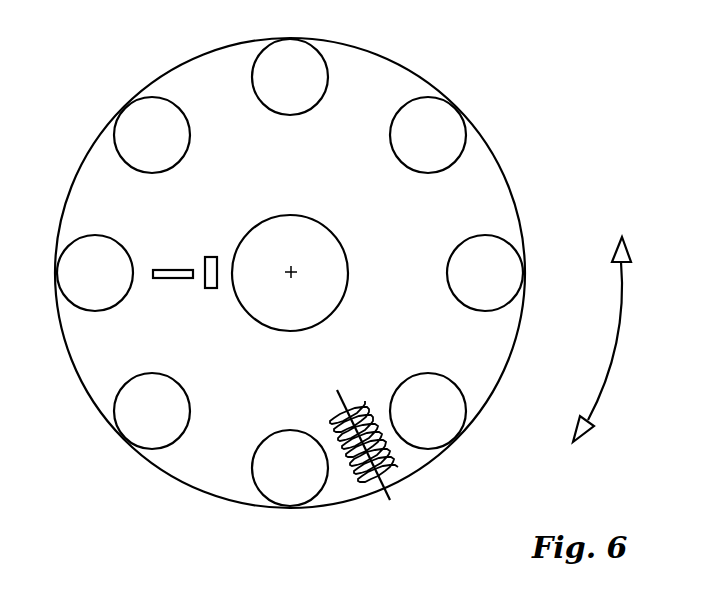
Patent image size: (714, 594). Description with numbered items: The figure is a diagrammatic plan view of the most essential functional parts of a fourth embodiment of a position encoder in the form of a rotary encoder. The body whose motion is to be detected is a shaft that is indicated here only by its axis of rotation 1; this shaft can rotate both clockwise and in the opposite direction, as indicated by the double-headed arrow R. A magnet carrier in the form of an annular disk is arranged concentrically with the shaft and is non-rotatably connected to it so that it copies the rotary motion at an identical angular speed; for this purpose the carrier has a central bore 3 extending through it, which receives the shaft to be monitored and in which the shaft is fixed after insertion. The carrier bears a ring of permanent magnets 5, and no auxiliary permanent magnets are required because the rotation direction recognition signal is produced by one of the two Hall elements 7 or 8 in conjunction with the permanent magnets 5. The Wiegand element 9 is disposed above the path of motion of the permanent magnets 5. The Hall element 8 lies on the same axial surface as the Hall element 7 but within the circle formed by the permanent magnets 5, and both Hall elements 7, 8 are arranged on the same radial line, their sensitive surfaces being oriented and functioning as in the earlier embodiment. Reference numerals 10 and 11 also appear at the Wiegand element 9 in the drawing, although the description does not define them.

The axis of rotation 1 is at (288, 270).
The central bore 3 is at (336, 231).
The permanent magnets 5 is at (278, 66).
The Hall element 7 is at (210, 257).
The Hall element 8 is at (164, 280).
The Wiegand element 9 is at (402, 494).
The stator core 10 is at (388, 497).
The coil 11 is at (368, 407).
The double-headed arrow R is at (612, 365).